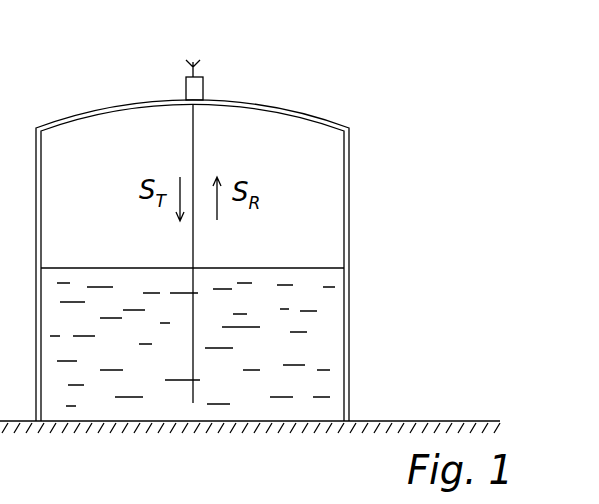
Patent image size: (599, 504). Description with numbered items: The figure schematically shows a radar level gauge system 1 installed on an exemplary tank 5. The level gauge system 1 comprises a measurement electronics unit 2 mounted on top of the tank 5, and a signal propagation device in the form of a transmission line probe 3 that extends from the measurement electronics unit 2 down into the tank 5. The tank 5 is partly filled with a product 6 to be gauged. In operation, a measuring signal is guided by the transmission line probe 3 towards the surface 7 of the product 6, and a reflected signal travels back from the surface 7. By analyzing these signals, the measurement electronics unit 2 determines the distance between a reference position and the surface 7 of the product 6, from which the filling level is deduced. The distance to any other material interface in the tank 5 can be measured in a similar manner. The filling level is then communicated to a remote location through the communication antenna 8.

The level gauge system 1 is at (191, 56).
The measurement electronics unit 2 is at (186, 88).
The transmission line probe 3 is at (195, 252).
The tank 5 is at (349, 158).
The product 6 is at (192, 344).
The surface 7 is at (318, 267).
The communication antenna 8 is at (186, 72).